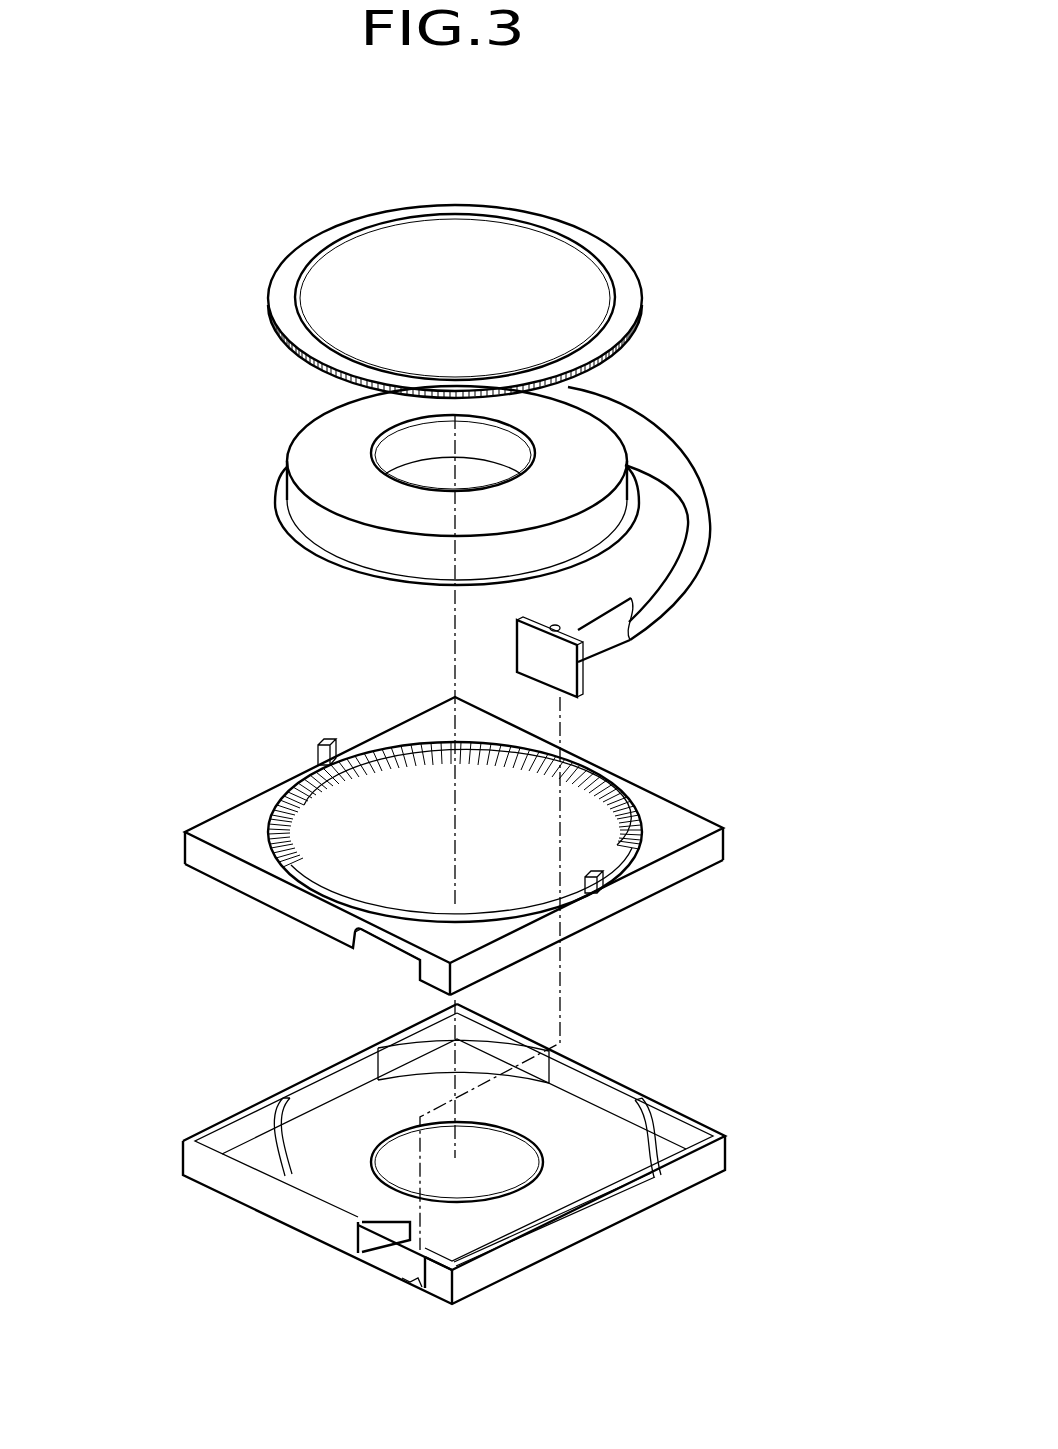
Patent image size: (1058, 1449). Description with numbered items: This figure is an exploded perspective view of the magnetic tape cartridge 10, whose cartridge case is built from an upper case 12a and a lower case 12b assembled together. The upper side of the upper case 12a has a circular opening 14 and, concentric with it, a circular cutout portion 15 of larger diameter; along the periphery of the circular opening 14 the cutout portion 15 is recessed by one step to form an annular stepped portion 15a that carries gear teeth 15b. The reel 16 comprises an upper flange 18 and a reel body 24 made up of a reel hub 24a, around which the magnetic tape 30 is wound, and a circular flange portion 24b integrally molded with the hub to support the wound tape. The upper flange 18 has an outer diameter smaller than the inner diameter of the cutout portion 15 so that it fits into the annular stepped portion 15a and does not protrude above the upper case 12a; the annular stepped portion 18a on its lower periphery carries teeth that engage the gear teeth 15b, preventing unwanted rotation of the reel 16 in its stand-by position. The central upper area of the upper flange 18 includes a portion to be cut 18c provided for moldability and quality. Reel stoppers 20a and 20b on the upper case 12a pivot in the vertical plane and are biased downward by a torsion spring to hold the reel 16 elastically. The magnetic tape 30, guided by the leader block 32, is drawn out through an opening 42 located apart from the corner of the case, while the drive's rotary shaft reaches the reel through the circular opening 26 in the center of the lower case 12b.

The magnetic tape cartridge 10 is at (566, 181).
The upper case 12a is at (668, 876).
The lower case 12b is at (587, 1227).
The circular opening 14 is at (660, 827).
The circular cutout portion 15 is at (351, 797).
The annular stepped portion 15a is at (385, 759).
The gear teeth 15b is at (577, 840).
The reel 16 is at (711, 218).
The upper flange 18 is at (635, 292).
The annular stepped portion 18a is at (288, 347).
The portion to be cut 18c is at (340, 272).
The reel stopper 20a is at (327, 743).
The reel stopper 20b is at (600, 893).
The reel body 24 is at (206, 410).
The reel hub 24a is at (400, 450).
The circular flange portion 24b is at (307, 550).
The circular opening 26 is at (506, 1152).
The magnetic tape 30 is at (713, 545).
The leader block 32 is at (560, 663).
The opening 42 is at (403, 962).